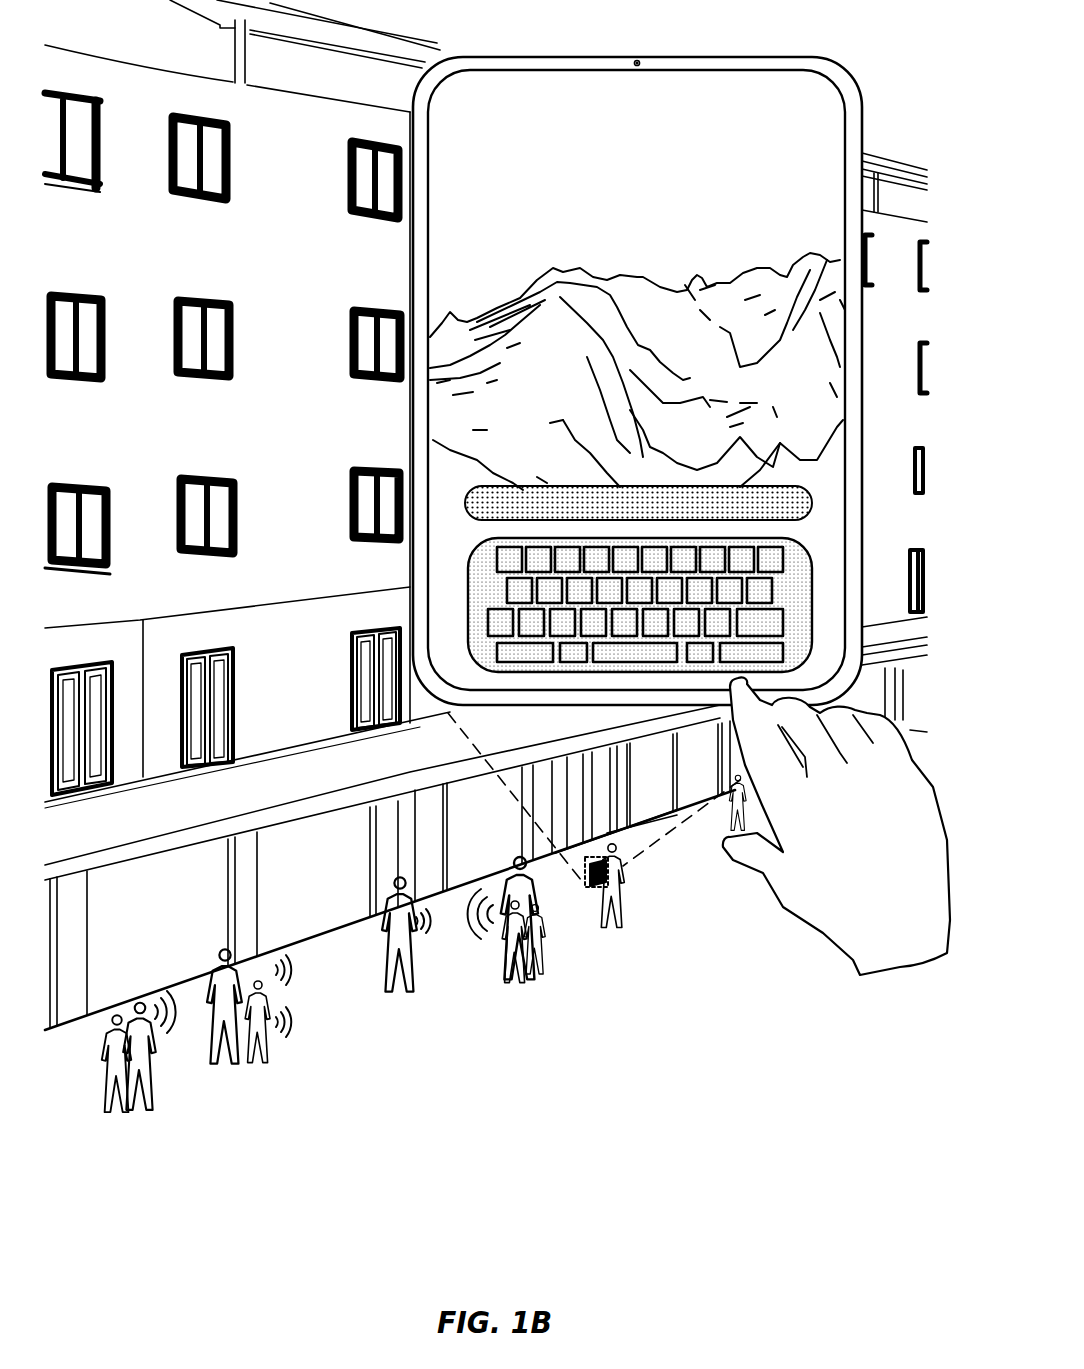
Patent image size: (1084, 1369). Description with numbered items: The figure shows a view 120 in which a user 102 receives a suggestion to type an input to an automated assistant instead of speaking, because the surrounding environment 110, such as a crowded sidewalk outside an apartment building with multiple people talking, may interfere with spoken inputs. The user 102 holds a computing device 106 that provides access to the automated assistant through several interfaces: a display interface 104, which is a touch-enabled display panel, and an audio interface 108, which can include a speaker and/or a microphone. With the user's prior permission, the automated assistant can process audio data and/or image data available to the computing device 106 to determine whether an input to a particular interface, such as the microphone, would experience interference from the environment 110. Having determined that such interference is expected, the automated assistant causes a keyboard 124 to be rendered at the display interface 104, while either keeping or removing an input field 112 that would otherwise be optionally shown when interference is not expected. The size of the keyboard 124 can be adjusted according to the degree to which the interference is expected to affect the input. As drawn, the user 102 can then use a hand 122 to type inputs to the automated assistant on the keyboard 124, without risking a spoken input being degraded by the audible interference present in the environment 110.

The user 102 is at (617, 942).
The display interface 104 is at (658, 150).
The computing device 106 is at (572, 54).
The audio interface 108 is at (645, 58).
The environment 110 is at (402, 1066).
The input field 112 is at (463, 490).
The view 120 is at (652, 386).
The hand 122 is at (891, 854).
The keyboard 124 is at (485, 672).